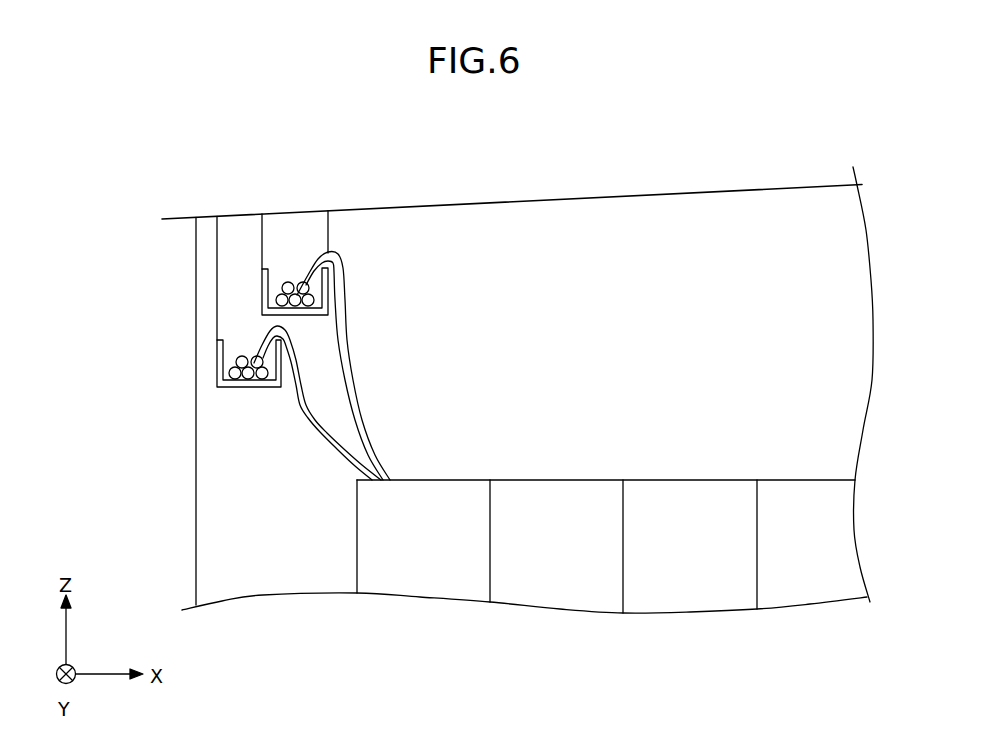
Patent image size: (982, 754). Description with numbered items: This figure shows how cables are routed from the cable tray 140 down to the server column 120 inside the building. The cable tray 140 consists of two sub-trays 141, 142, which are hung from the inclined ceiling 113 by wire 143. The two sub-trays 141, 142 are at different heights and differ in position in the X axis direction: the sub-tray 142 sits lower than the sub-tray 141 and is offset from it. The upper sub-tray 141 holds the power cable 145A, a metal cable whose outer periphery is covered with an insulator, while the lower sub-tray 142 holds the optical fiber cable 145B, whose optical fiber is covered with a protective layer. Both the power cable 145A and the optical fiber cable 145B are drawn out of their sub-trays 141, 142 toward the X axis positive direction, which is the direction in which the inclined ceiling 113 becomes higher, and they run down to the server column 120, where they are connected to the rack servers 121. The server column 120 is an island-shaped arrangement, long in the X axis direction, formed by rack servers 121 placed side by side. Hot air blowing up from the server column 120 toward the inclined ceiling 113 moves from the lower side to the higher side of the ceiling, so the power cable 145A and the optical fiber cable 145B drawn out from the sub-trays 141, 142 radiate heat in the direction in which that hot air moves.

The inclined ceiling 113 is at (573, 199).
The server column 120 is at (606, 491).
The rack server 121 is at (659, 500).
The cable tray 140 is at (187, 301).
The sub-tray 141 is at (263, 295).
The sub-tray 142 is at (218, 357).
The wire 143 is at (330, 233).
The power cable 145A is at (350, 353).
The optical fiber cable 145B is at (316, 425).